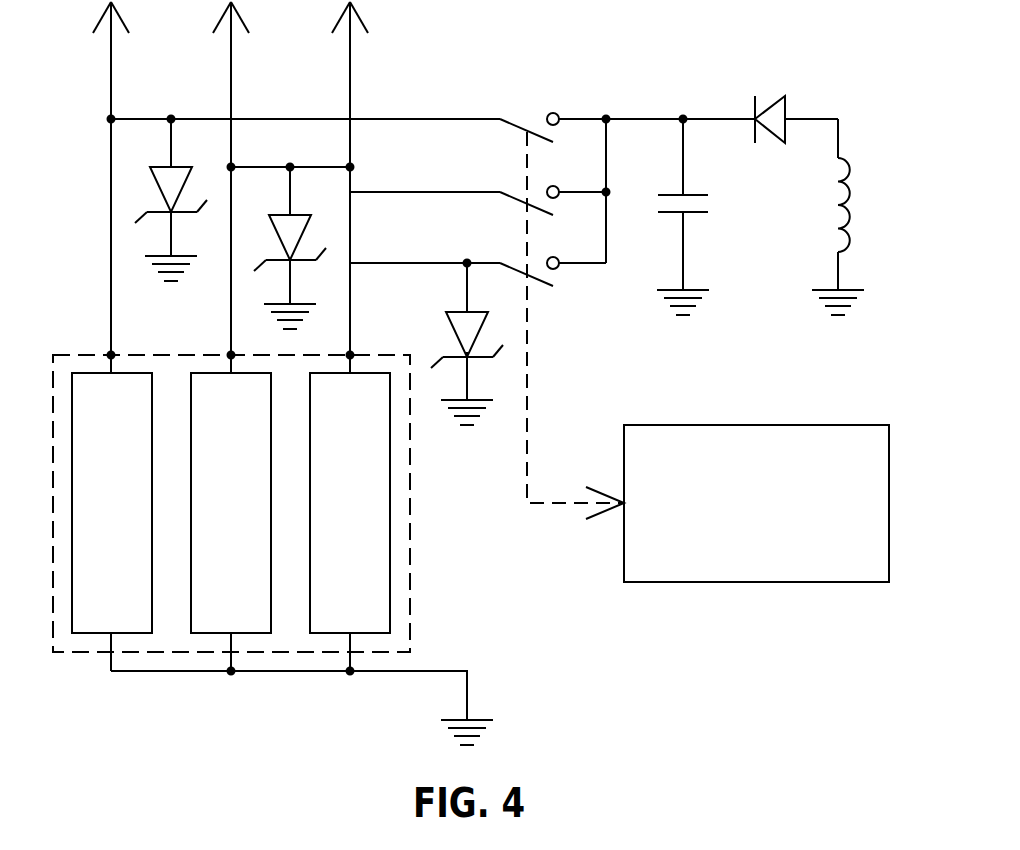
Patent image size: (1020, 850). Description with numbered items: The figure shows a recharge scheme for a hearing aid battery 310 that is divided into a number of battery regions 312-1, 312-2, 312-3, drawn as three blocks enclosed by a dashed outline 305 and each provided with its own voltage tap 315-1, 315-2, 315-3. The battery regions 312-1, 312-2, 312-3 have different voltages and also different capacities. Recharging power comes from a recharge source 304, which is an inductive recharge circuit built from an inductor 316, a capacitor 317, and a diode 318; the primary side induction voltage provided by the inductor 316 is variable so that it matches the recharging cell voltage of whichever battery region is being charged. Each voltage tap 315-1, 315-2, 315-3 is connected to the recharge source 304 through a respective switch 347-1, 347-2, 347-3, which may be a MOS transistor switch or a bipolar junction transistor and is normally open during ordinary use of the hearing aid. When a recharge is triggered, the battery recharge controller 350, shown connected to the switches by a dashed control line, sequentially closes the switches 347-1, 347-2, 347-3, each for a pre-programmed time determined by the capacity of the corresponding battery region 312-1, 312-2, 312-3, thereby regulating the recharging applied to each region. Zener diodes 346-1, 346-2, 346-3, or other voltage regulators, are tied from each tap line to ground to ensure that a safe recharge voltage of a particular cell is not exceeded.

The recharge source 304 is at (848, 99).
The transceiver module 305 is at (70, 645).
The hearing aid battery 310 is at (436, 557).
The battery region 312-1 is at (139, 503).
The battery region 312-2 is at (258, 503).
The battery region 312-3 is at (377, 503).
The voltage tap 315-1 is at (111, 355).
The voltage tap 315-2 is at (231, 355).
The voltage tap 315-3 is at (350, 355).
The inductor 316 is at (850, 212).
The capacitor 317 is at (692, 213).
The diode 318 is at (767, 135).
The zener diode 346-1 is at (160, 190).
The zener diode 346-2 is at (303, 237).
The zener diode 346-3 is at (480, 333).
The switch 347-1 is at (570, 97).
The switch 347-2 is at (570, 170).
The switch 347-3 is at (570, 244).
The battery recharge controller 350 is at (758, 425).